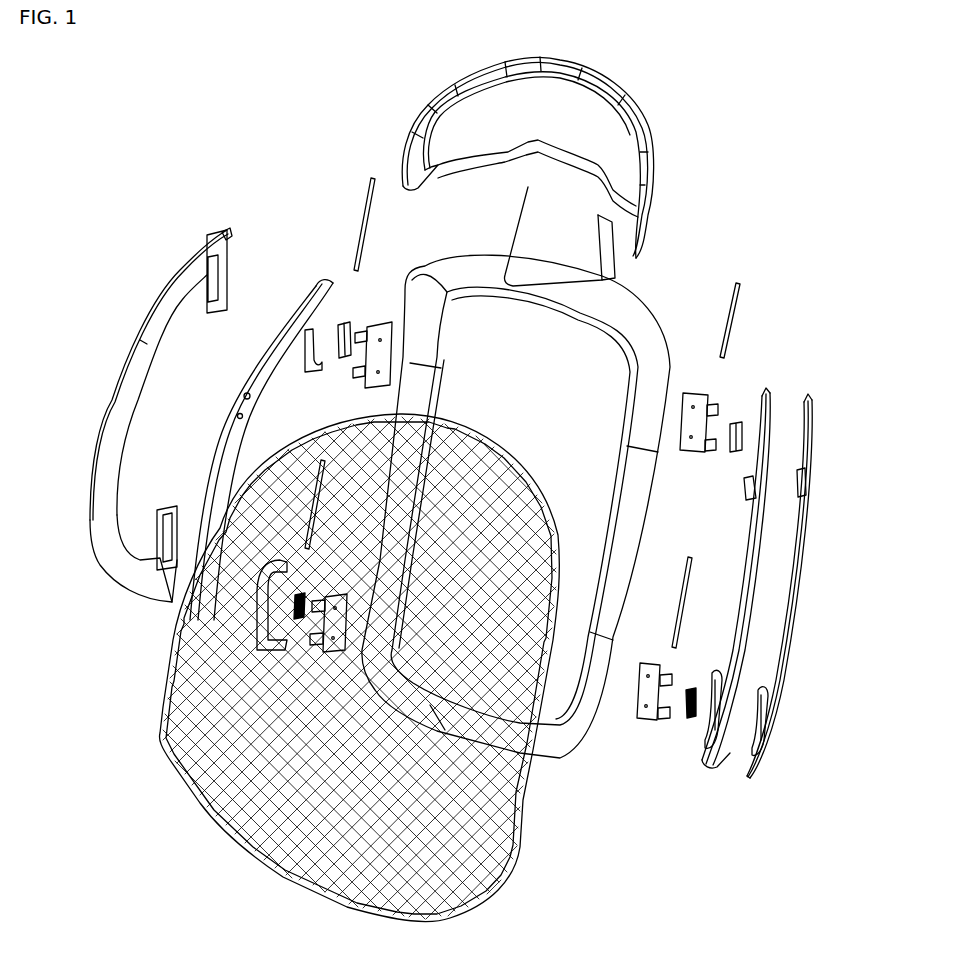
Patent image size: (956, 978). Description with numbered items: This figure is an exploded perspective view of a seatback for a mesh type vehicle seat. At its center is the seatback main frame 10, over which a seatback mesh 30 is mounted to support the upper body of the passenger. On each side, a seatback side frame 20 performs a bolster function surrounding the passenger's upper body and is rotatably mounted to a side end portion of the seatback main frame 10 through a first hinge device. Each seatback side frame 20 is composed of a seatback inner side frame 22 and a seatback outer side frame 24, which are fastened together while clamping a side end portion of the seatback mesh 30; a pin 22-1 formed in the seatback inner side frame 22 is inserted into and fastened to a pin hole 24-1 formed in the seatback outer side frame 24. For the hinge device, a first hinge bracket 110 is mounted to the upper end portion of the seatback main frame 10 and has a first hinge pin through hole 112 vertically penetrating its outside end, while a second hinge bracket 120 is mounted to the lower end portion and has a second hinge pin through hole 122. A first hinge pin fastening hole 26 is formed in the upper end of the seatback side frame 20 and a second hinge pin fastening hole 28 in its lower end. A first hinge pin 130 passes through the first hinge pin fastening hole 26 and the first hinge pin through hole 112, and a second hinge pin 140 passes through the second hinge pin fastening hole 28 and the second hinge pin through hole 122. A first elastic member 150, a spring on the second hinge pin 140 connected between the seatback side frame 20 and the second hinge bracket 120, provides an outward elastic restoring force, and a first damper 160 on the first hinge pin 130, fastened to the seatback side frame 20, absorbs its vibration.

The seatback main frame 10 is at (438, 388).
The seatback side frame 20 is at (453, 504).
The seatback inner side frame 22 is at (245, 418).
The pin 22-1 is at (246, 392).
The seatback outer side frame 24 is at (125, 418).
The pin hole 24-1 is at (143, 343).
The first hinge pin fastening hole 26 is at (326, 277).
The second hinge pin fastening hole 28 is at (283, 567).
The seatback mesh 30 is at (190, 750).
The first hinge bracket 110 is at (390, 340).
The first hinge pin through hole 112 is at (367, 327).
The second hinge bracket 120 is at (347, 620).
The second hinge pin through hole 122 is at (328, 608).
The first hinge pin 130 is at (362, 183).
The second hinge pin 140 is at (318, 485).
The first elastic member 150 is at (296, 612).
The first damper 160 is at (343, 345).